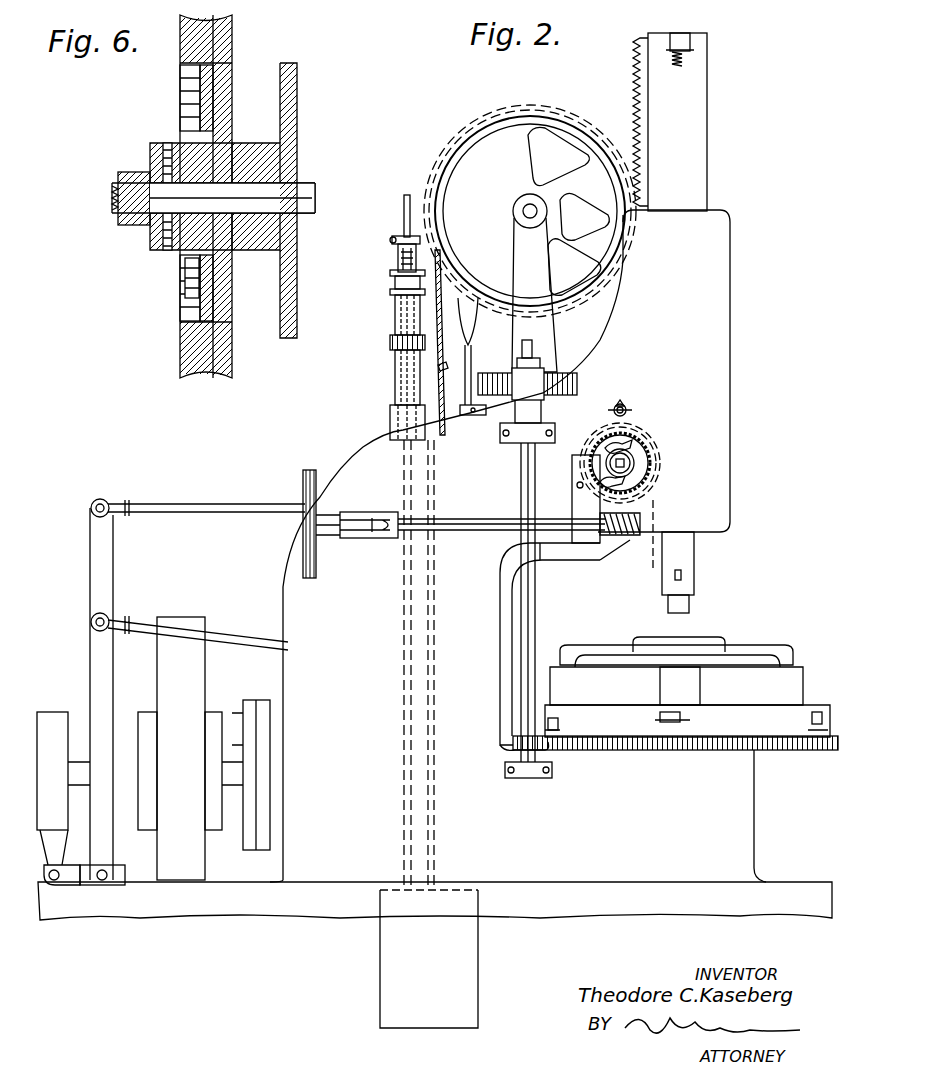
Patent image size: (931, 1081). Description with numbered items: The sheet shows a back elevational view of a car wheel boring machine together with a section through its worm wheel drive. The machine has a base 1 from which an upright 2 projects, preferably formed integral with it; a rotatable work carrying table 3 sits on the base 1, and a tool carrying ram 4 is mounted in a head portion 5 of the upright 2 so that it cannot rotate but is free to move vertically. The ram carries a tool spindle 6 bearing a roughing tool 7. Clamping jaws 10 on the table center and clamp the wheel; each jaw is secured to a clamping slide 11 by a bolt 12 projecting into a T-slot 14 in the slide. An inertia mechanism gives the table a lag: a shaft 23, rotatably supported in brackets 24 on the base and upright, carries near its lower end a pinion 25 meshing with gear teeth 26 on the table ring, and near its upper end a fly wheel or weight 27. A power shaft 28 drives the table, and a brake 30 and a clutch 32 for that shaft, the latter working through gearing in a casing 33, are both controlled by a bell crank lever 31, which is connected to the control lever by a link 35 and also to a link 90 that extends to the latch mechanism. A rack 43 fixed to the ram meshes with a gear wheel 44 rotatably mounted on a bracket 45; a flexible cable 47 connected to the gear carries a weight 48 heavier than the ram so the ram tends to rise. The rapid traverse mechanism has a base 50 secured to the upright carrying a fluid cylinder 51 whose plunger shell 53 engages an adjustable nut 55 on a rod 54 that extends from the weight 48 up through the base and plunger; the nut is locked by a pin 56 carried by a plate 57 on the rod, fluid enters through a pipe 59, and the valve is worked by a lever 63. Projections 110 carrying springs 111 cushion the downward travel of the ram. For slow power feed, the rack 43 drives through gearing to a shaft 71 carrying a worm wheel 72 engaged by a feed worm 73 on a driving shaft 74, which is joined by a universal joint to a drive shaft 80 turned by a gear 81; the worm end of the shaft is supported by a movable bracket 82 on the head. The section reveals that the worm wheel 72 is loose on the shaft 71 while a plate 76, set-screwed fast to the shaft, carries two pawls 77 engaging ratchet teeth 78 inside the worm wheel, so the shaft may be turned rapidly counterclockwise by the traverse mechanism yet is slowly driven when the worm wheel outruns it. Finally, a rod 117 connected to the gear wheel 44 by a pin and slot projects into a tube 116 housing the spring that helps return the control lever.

In FIG. 2, the base 1 is at (782, 896).
In FIG. 2, the upright 2 is at (285, 590).
In FIG. 2, the work carrying table 3 is at (745, 720).
In FIG. 2, the tool carrying ram 4 is at (702, 162).
In FIG. 6, the head portion 5 is at (297, 315).
In FIG. 2, the head portion 5 is at (716, 368).
In FIG. 2, the tool spindle 6 is at (620, 404).
In FIG. 2, the roughing tool 7 is at (682, 577).
In FIG. 2, the clamping jaws 10 is at (793, 680).
In FIG. 2, the clamping slide 11 is at (685, 723).
In FIG. 2, the bolt 12 is at (682, 708).
In FIG. 2, the T-slots 14 is at (686, 728).
In FIG. 2, the shaft 23 is at (535, 615).
In FIG. 2, the brackets 24 is at (502, 440).
In FIG. 2, the pinion 25 is at (500, 745).
In FIG. 2, the gear teeth 26 is at (658, 752).
In FIG. 2, the fly wheel or weight 27 is at (572, 378).
In FIG. 2, the power shaft 28 is at (233, 712).
In FIG. 2, the brake 30 is at (52, 720).
In FIG. 2, the bell crank lever 31 is at (108, 664).
In FIG. 2, the clutch 32 is at (128, 725).
In FIG. 2, the casing 33 is at (183, 636).
In FIG. 2, the link 35 is at (242, 641).
In FIG. 2, the rack 43 is at (635, 78).
In FIG. 2, the gear wheel 44 is at (507, 138).
In FIG. 2, the bracket 45 is at (540, 328).
In FIG. 2, the flexible cable 47 is at (440, 330).
In FIG. 2, the weight 48 is at (429, 959).
In FIG. 2, the base 50 is at (392, 425).
In FIG. 2, the fluid cylinder 51 is at (395, 384).
In FIG. 2, the plunger shell 53 is at (395, 318).
In FIG. 2, the rod 54 is at (398, 262).
In FIG. 2, the adjustable nut 55 is at (395, 280).
In FIG. 2, the pin 56 is at (398, 256).
In FIG. 2, the plate 57 is at (392, 240).
In FIG. 2, the pipe 59 is at (404, 200).
In FIG. 2, the lever 63 is at (441, 368).
In FIG. 6, the shaft 71 is at (297, 185).
In FIG. 2, the shaft 71 is at (612, 457).
In FIG. 6, the worm wheel 72 is at (232, 42).
In FIG. 2, the worm wheel 72 is at (645, 494).
In FIG. 2, the feed worm 73 is at (642, 512).
In FIG. 2, the driving shaft 74 is at (467, 519).
In FIG. 6, the plate 76 is at (205, 148).
In FIG. 2, the plate 76 is at (632, 462).
In FIG. 6, the pawls 77 is at (185, 272).
In FIG. 2, the pawls 77 is at (628, 442).
In FIG. 6, the ratchet teeth 78 is at (190, 88).
In FIG. 2, the ratchet teeth 78 is at (606, 463).
In FIG. 2, the drive shaft 80 is at (370, 512).
In FIG. 2, the gear 81 is at (310, 470).
In FIG. 2, the bracket 82 is at (575, 500).
In FIG. 2, the link 90 is at (199, 514).
In FIG. 2, the projections 110 is at (690, 41).
In FIG. 2, the springs 111 is at (686, 58).
In FIG. 2, the tube 116 is at (462, 415).
In FIG. 2, the rod 117 is at (474, 345).